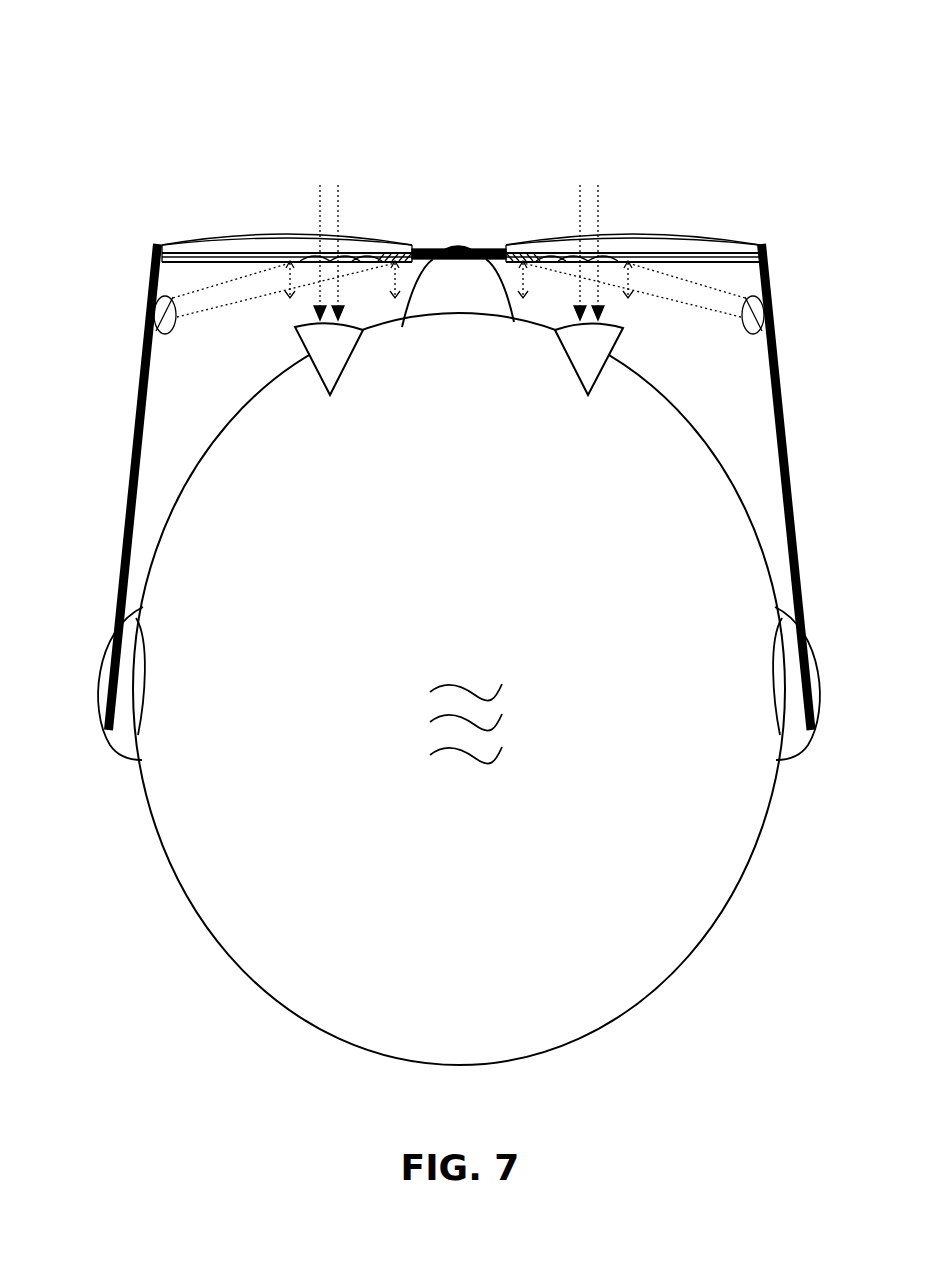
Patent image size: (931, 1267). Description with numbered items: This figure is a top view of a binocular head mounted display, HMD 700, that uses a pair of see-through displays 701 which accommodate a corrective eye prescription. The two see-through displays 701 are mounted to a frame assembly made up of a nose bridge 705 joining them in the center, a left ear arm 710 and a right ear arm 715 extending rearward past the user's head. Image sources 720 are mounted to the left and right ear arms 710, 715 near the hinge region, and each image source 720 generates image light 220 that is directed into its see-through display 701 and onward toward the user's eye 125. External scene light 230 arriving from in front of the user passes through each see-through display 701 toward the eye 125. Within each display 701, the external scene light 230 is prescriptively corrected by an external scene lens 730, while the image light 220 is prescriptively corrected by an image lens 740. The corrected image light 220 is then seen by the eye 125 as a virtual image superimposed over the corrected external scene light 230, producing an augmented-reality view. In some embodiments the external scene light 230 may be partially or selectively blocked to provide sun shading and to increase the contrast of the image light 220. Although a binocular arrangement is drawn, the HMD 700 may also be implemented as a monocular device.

The binocular head mounted display 700 is at (737, 73).
The see-through display 701 is at (158, 184).
The nose bridge 705 is at (490, 249).
The left ear arm 710 is at (128, 455).
The right ear arm 715 is at (792, 455).
The image source 720 is at (160, 325).
The external scene lens 730 is at (195, 245).
The image lens 740 is at (158, 290).
The image light 220 is at (208, 312).
The external scene light 230 is at (320, 185).
The eye 125 is at (340, 385).